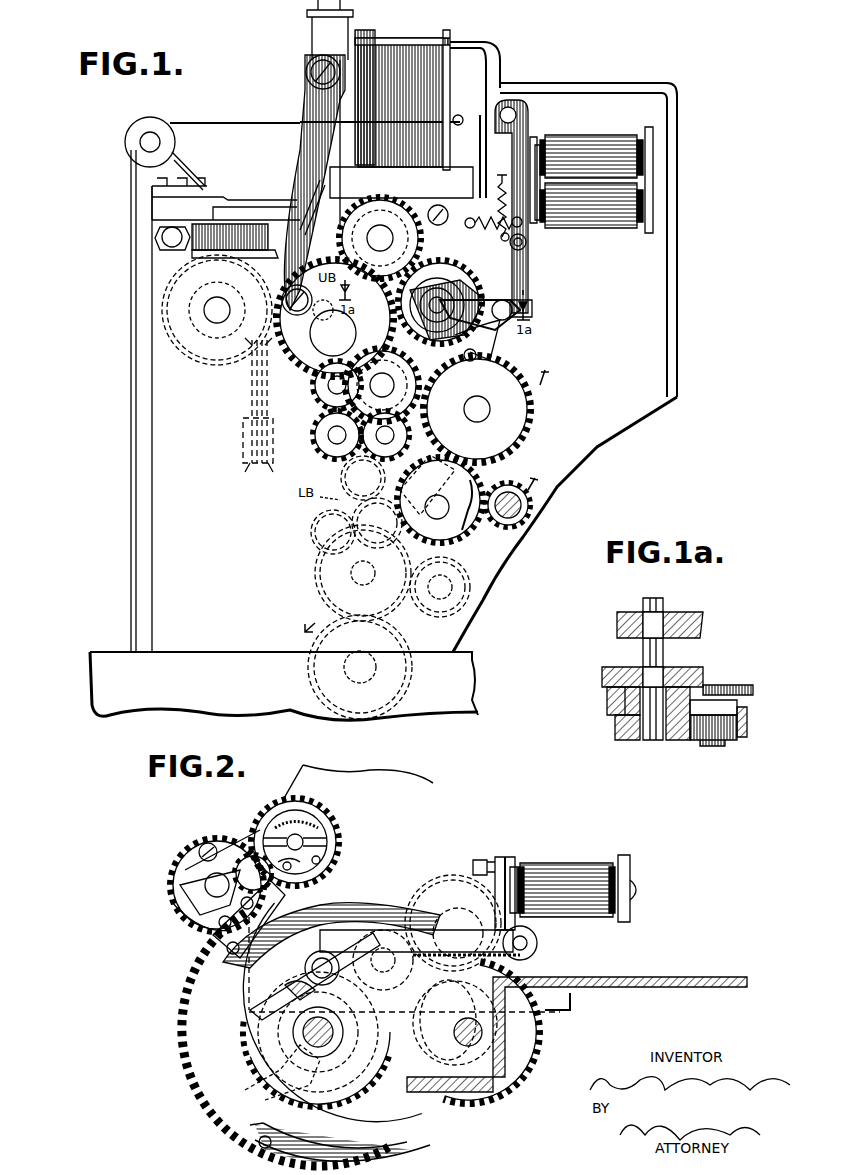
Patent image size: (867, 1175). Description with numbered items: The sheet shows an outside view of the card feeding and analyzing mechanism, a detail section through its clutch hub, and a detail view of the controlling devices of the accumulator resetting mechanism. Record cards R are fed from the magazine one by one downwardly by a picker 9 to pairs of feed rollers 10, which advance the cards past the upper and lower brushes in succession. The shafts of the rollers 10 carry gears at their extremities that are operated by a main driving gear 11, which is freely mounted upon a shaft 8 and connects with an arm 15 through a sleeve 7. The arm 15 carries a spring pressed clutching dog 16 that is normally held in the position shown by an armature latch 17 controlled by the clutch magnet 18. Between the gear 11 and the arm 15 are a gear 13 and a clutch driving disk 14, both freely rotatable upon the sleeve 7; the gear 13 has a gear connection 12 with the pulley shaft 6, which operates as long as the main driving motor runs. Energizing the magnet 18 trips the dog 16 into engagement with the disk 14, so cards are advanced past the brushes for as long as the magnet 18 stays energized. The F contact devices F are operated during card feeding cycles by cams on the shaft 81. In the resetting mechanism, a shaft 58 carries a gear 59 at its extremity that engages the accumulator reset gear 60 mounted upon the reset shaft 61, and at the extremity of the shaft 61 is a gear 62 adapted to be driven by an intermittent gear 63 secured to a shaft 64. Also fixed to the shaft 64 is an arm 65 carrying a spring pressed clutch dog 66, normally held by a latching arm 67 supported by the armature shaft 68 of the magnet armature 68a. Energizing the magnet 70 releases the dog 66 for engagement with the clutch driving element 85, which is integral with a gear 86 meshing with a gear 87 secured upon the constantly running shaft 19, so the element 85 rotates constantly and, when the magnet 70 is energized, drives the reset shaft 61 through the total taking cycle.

In FIG. 1, the record cards R is at (400, 60).
In FIG. 1, the picker 9 is at (365, 50).
In FIG. 1, the feed rollers 10 is at (372, 198).
In FIG. 1, the main driving gear 11 is at (435, 275).
In FIG. 1A, the main driving gear 11 is at (605, 675).
In FIG. 1, the shaft 8 is at (440, 297).
In FIG. 1A, the shaft 8 is at (670, 690).
In FIG. 1, the sleeve 7 is at (448, 290).
In FIG. 1A, the sleeve 7 is at (670, 735).
In FIG. 1, the arm 15 is at (468, 295).
In FIG. 1A, the arm 15 is at (693, 740).
In FIG. 1, the clutching dog 16 is at (505, 337).
In FIG. 1A, the clutching dog 16 is at (718, 708).
In FIG. 1, the clutch driving disk 14 is at (470, 355).
In FIG. 1A, the clutch driving disk 14 is at (615, 720).
In FIG. 1, the gear 13 is at (450, 368).
In FIG. 1A, the gear 13 is at (607, 695).
In FIG. 1, the gear connection 12 is at (495, 465).
In FIG. 1A, the gear connection 12 is at (748, 683).
In FIG. 1, the pulley shaft 6 is at (520, 513).
In FIG. 1, the armature latch 17 is at (535, 300).
In FIG. 1A, the armature latch 17 is at (747, 740).
In FIG. 1, the clutch magnet 18 is at (600, 145).
In FIG. 1, the constantly running shaft 19 is at (345, 663).
In FIG. 2, the constantly running shaft 19 is at (470, 1032).
In FIG. 1, the shaft 81 is at (210, 318).
In FIG. 1, the F contact devices F is at (250, 340).
In FIG. 2, the shaft 58 is at (330, 830).
In FIG. 2, the gear 59 is at (340, 847).
In FIG. 2, the accumulator reset gear 60 is at (195, 848).
In FIG. 2, the reset shaft 61 is at (215, 884).
In FIG. 2, the gear 62 is at (175, 905).
In FIG. 2, the intermittent gear 63 is at (195, 985).
In FIG. 2, the shaft 64 is at (318, 1032).
In FIG. 2, the arm 65 is at (268, 1098).
In FIG. 2, the clutch dog 66 is at (290, 972).
In FIG. 2, the latching arm 67 is at (432, 930).
In FIG. 2, the armature shaft 68 is at (538, 944).
In FIG. 2, the magnet armature 68a is at (512, 857).
In FIG. 2, the magnet 70 is at (578, 870).
In FIG. 2, the clutch driving element 85 is at (316, 1039).
In FIG. 2, the gear 86 is at (355, 1095).
In FIG. 2, the gear 87 is at (540, 1070).